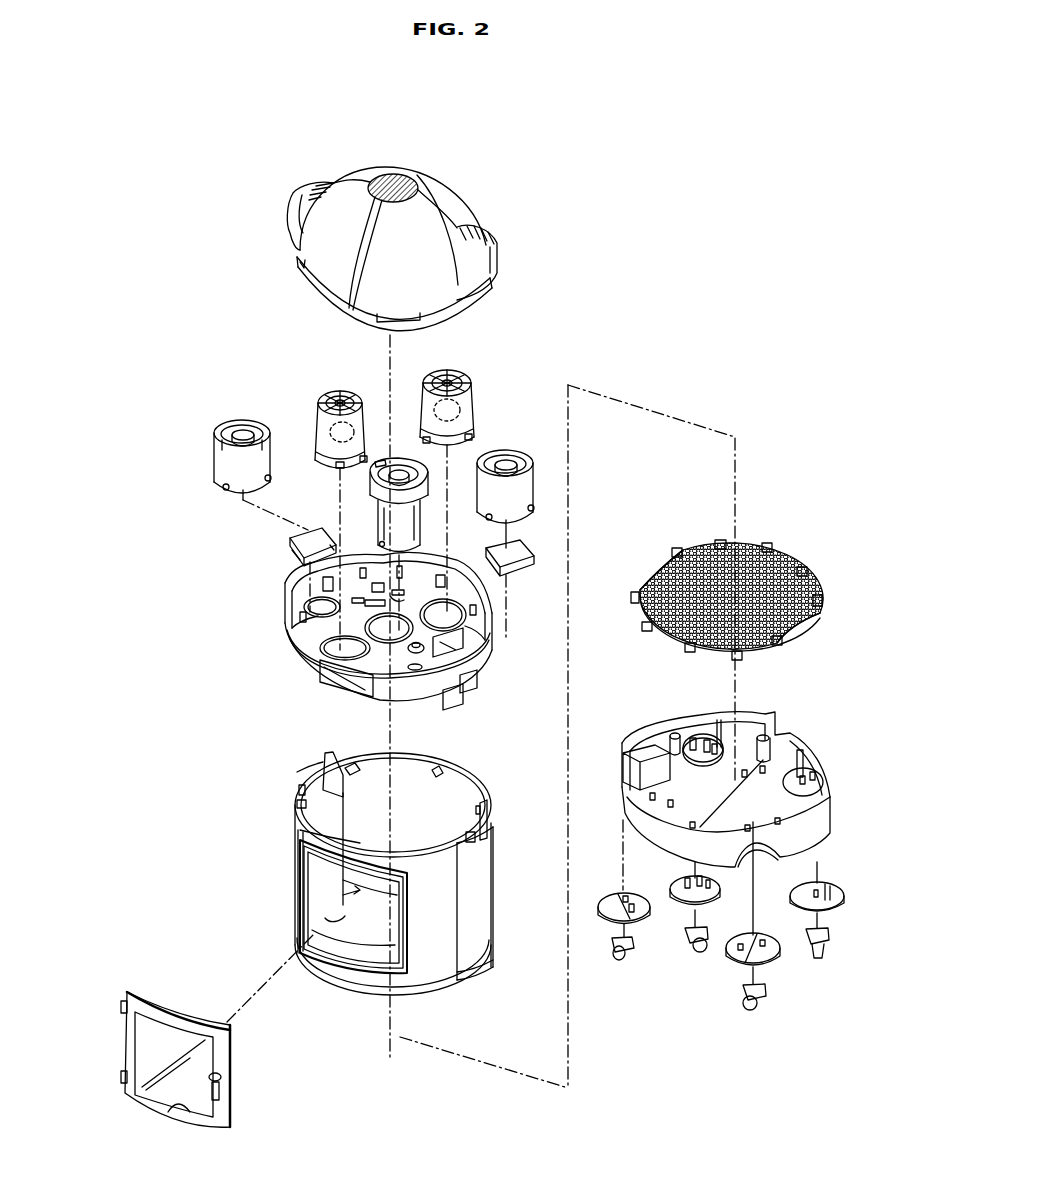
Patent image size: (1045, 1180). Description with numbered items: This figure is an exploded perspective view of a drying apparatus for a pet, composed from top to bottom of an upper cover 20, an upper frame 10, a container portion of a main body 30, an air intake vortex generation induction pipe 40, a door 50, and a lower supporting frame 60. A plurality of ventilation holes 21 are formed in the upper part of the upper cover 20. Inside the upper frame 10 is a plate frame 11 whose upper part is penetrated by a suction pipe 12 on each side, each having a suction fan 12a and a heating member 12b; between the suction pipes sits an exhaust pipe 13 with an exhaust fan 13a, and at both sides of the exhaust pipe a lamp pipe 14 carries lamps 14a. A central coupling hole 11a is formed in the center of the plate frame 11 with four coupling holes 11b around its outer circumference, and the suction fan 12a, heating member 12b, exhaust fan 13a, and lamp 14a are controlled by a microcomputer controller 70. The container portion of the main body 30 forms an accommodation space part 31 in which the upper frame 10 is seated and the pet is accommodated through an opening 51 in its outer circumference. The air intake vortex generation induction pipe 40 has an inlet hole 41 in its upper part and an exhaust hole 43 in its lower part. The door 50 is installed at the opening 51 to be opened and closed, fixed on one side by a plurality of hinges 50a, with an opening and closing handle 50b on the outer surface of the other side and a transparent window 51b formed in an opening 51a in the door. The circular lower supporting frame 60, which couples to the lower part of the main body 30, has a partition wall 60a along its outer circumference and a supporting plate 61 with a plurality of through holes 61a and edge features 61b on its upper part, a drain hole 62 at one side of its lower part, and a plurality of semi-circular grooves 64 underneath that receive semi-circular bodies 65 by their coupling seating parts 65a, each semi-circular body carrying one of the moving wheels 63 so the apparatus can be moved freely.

The upper frame 10 is at (358, 612).
The plate frame 11 is at (335, 620).
The central coupling hole 11a is at (378, 603).
The coupling holes 11b is at (305, 605).
The suction pipe 12 is at (225, 460).
The suction fan 12a is at (244, 436).
The heating member 12b is at (295, 535).
The exhaust pipe 13 is at (397, 523).
The exhaust fan 13a is at (381, 474).
The lamp pipe 14 is at (320, 434).
The lamp 14a is at (338, 405).
The upper cover 20 is at (445, 220).
The ventilation holes 21 is at (325, 184).
The container portion of the main body 30 is at (339, 887).
The accommodation space part 31 is at (428, 797).
The air intake vortex generation induction pipe 40 is at (322, 826).
The inlet hole 41 is at (320, 782).
The exhaust hole 43 is at (340, 910).
The door 50 is at (166, 1069).
The hinges 50a is at (120, 1006).
The opening and closing handle 50b is at (220, 1092).
The opening 51 is at (352, 958).
The opening 51a is at (187, 1112).
The transparent window 51b is at (158, 1092).
The lower supporting frame 60 is at (757, 764).
The partition wall 60a is at (695, 725).
The supporting plate 61 is at (768, 568).
The through holes 61a is at (682, 602).
The filter notch 61b is at (655, 565).
The drain hole 62 is at (770, 745).
The moving wheels 63 is at (626, 952).
The semi-circular groove 64 is at (640, 830).
The semi-circular body 65 is at (674, 922).
The coupling seating part 65a is at (640, 900).
The microcomputer controller 70 is at (330, 678).